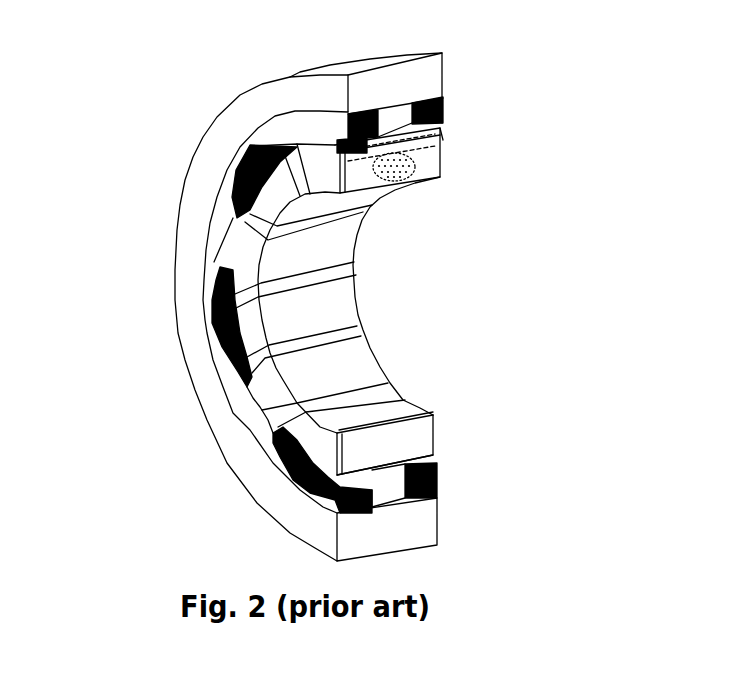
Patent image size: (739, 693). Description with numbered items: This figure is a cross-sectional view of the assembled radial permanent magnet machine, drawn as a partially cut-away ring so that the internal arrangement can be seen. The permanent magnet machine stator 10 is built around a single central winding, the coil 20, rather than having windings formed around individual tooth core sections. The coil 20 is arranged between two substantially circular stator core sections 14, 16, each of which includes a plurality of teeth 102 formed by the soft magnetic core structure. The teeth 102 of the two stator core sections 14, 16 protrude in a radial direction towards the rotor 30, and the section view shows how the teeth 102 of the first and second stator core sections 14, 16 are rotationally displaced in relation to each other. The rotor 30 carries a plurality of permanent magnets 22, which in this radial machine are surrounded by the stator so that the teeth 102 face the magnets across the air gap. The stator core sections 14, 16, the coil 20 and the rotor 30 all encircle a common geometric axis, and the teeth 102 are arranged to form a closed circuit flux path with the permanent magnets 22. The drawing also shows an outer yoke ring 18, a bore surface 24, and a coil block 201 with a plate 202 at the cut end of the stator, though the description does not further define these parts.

The permanent magnet machine stator 10 is at (383, 490).
The first stator core section 14 is at (444, 101).
The second stator core section 16 is at (208, 261).
The outer ring (stator yoke) 18 is at (216, 146).
The coil 20 is at (402, 122).
The permanent magnets 22 is at (350, 338).
The inner bore surface 24 is at (340, 298).
The rotor 30 is at (363, 388).
The teeth 102 is at (253, 403).
The coil block 201 is at (416, 170).
The insulating plate 202 is at (422, 156).